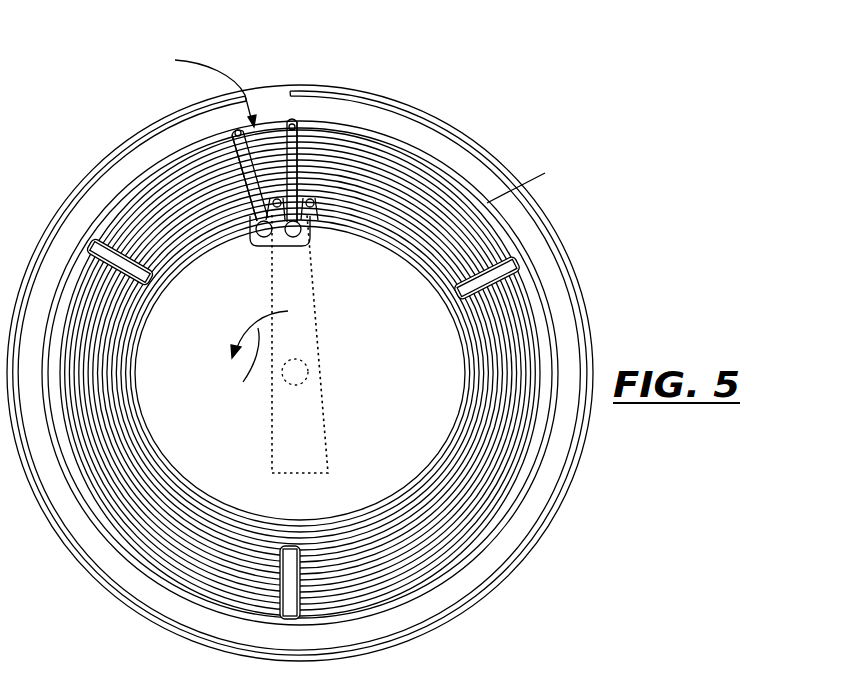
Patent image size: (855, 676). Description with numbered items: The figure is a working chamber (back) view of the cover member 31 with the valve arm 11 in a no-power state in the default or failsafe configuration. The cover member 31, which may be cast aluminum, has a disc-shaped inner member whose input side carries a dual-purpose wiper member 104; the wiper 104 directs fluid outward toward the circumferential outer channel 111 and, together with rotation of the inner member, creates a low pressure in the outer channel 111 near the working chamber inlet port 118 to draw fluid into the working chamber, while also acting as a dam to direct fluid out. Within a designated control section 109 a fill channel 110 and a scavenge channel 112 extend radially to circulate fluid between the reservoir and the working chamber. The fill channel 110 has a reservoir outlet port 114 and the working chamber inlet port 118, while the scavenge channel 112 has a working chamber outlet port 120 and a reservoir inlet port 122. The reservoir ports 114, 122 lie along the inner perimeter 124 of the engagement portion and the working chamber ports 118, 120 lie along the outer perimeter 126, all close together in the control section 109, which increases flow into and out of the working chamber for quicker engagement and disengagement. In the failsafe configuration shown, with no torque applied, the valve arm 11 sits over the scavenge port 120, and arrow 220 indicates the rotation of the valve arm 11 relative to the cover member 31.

The valve arm 11 is at (326, 408).
The cover member 31 is at (477, 140).
The wiper member 104 is at (265, 112).
The control section 109 is at (193, 87).
The fill channel 110 is at (237, 186).
The circumferential outer channel 111 is at (529, 184).
The scavenge channel 112 is at (315, 152).
The reservoir outlet port 114 is at (236, 128).
The working chamber inlet port 118 is at (250, 240).
The working chamber outlet port 120 is at (310, 233).
The reservoir inlet port 122 is at (289, 122).
The inner perimeter 124 is at (413, 250).
The outer perimeter 126 is at (408, 140).
The arrow 220 is at (252, 362).